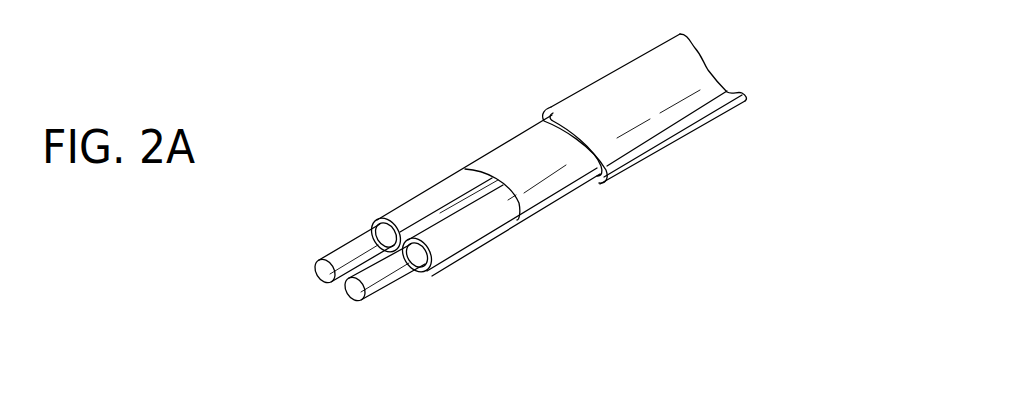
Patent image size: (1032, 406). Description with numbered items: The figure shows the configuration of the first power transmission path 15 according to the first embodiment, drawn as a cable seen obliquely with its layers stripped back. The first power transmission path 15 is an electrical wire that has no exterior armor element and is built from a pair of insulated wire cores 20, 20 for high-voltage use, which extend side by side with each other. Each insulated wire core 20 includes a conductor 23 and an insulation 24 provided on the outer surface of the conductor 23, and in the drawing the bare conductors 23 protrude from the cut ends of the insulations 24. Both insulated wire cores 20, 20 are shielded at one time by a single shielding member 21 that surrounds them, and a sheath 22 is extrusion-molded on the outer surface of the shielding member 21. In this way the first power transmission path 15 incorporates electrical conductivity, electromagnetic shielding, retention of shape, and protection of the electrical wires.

The first power transmission path 15 is at (426, 124).
The insulated wire core 20 is at (383, 160).
The shielding member 21 is at (552, 192).
The sheath 22 is at (605, 92).
The conductor 23 is at (347, 250).
The insulation 24 is at (400, 215).